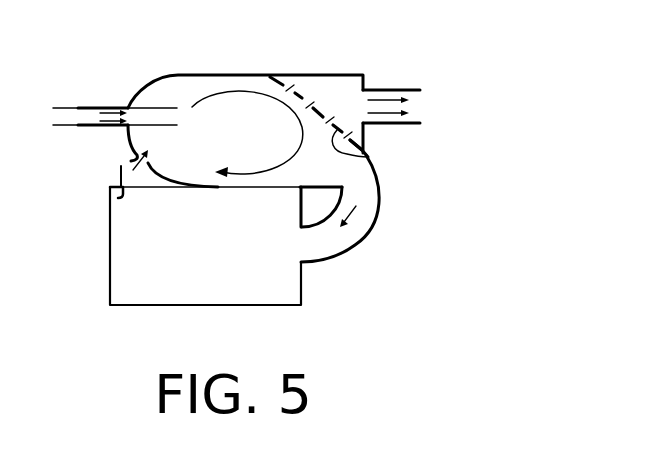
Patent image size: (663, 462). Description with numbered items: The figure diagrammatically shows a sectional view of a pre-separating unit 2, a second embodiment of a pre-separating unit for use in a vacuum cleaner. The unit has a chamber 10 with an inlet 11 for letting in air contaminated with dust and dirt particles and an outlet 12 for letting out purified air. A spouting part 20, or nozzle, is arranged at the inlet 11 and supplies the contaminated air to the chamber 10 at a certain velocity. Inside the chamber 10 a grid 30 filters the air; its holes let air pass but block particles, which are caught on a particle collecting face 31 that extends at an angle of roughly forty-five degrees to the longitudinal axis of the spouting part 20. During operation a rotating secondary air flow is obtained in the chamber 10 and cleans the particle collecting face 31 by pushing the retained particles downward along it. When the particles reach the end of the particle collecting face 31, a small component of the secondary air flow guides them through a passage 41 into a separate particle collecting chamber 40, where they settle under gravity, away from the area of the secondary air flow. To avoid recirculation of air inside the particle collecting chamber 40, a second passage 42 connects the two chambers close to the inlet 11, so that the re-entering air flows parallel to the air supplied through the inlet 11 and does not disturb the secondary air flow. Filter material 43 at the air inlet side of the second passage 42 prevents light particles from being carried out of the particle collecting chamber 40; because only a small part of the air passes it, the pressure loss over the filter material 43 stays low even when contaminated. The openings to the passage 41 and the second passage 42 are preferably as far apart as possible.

The pre-separating unit 2 is at (557, 112).
The chamber 10 is at (212, 75).
The inlet 11 is at (90, 106).
The outlet 12 is at (388, 90).
The spouting part 20 is at (145, 114).
The grid 30 is at (301, 96).
The particle collecting face 31 is at (370, 157).
The particle collecting chamber 40 is at (110, 265).
The passage 41 is at (363, 215).
The second passage 42 is at (122, 164).
The filter material 43 is at (122, 196).